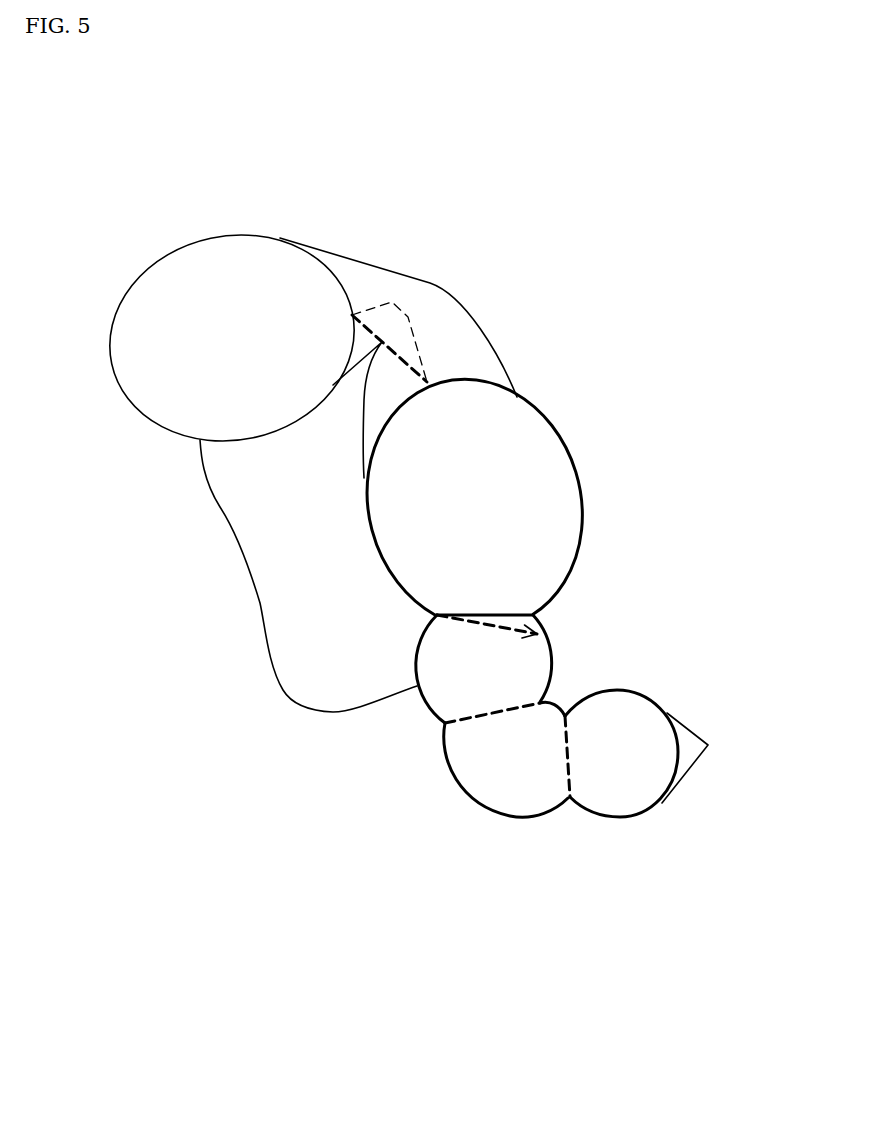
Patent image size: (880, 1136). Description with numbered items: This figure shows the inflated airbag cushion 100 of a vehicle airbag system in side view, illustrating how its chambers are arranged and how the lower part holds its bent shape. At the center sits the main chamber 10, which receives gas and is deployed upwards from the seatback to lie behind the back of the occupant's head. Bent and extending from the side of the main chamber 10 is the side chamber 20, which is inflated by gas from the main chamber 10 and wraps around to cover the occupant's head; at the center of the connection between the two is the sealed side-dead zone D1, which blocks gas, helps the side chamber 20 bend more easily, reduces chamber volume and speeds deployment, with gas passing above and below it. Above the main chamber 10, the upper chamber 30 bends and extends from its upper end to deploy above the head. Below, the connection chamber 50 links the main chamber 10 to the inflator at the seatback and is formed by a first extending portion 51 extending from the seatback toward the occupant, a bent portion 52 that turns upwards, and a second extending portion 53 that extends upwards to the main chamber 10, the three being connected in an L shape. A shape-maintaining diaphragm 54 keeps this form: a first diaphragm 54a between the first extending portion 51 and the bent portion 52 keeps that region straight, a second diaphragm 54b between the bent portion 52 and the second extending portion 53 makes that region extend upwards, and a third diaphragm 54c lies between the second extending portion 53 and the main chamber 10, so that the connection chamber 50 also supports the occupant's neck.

The airbag cushion 100 is at (320, 219).
The upper chamber 30 is at (205, 260).
The side chamber 20 is at (270, 545).
The main chamber 10 is at (542, 458).
The side-dead zone D1 is at (393, 322).
The connection chamber 50 is at (547, 833).
The first extending portion 51 is at (652, 763).
The bent portion 52 is at (497, 788).
The second extending portion 53 is at (528, 662).
The shape-maintaining diaphragm 54 is at (501, 744).
The first diaphragm 54a is at (570, 772).
The second diaphragm 54b is at (482, 720).
The third diaphragm 54c is at (517, 627).